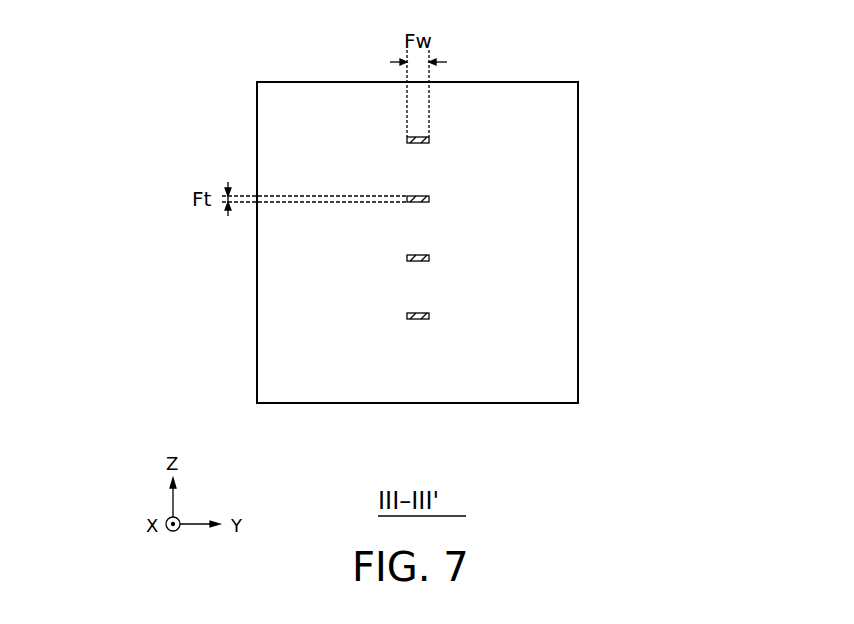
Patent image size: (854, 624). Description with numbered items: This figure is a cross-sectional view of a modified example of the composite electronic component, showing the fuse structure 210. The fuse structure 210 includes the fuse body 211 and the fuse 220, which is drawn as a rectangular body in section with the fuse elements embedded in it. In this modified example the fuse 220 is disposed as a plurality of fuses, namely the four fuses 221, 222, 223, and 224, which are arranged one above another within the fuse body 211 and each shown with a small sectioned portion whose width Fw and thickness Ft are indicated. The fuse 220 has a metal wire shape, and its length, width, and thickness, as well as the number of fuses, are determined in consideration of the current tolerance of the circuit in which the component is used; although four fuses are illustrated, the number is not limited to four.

The fuse structure 210 is at (500, 80).
The fuse body 211 is at (553, 102).
The fuse 220 is at (652, 143).
The first fuse 221 is at (429, 141).
The second fuse 222 is at (429, 200).
The third fuse 223 is at (429, 259).
The fourth fuse 224 is at (429, 317).